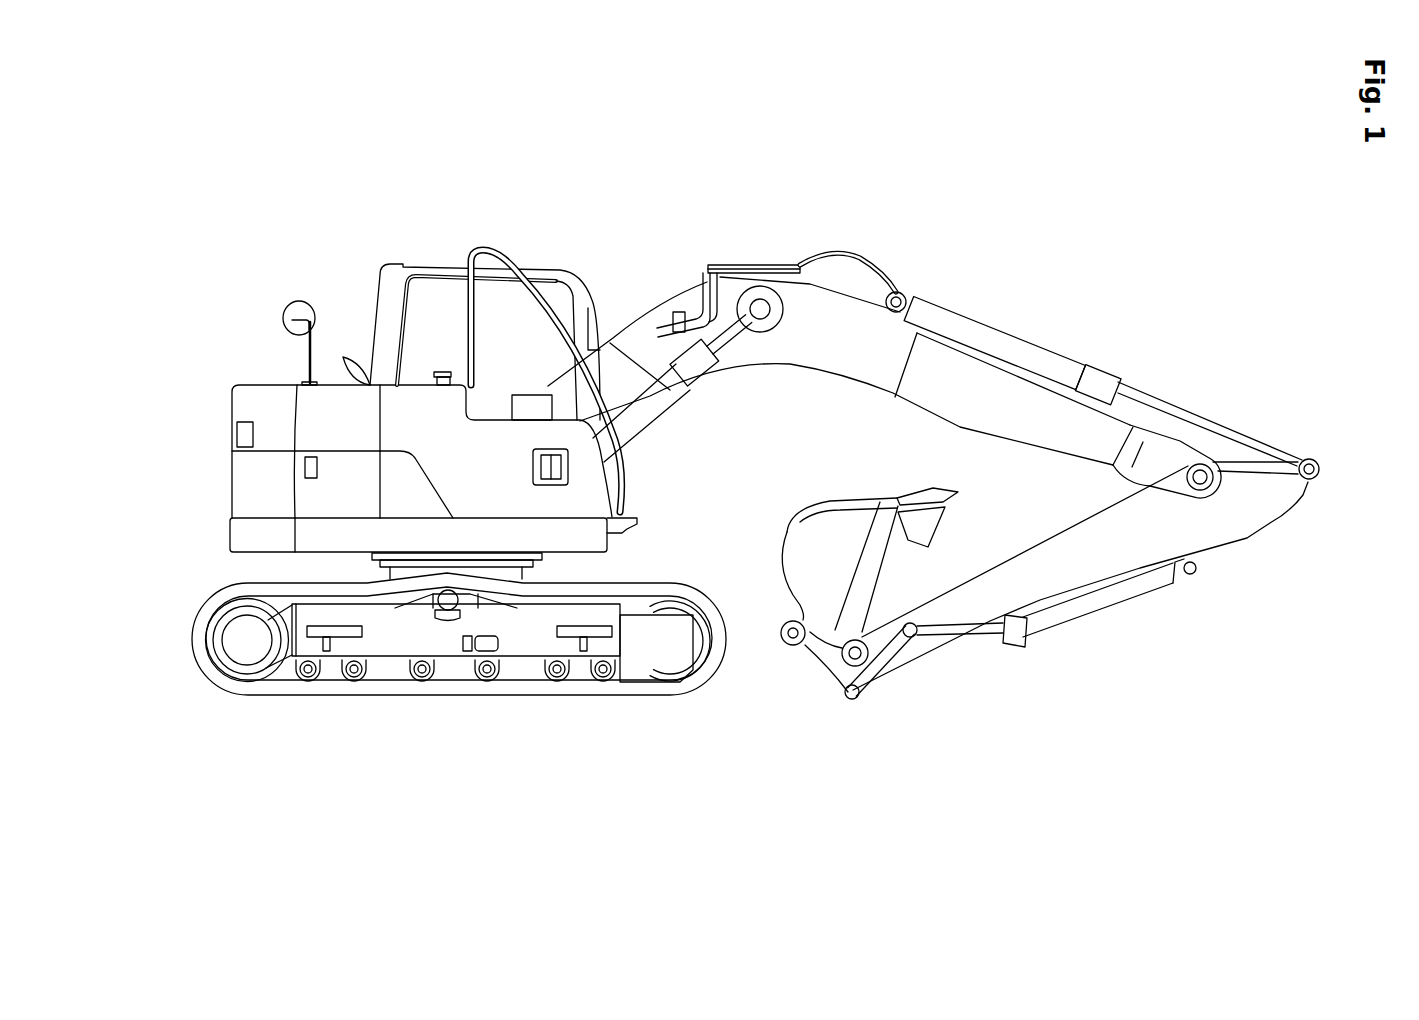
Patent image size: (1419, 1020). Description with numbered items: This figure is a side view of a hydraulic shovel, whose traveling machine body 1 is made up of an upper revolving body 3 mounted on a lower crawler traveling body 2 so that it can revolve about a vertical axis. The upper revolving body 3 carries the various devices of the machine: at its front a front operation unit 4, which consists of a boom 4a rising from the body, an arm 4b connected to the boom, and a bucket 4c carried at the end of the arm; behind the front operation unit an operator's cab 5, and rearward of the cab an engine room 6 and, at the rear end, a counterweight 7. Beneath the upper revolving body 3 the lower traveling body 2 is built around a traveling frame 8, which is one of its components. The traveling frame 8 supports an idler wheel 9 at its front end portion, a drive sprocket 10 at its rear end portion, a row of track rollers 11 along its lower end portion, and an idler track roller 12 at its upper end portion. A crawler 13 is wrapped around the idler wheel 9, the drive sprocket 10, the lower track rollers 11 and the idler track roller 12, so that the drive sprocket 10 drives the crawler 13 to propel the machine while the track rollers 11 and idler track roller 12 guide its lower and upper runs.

The traveling machine body 1 is at (853, 197).
The lower crawler traveling body 2 is at (460, 703).
The upper revolving body 3 is at (352, 288).
The front operation unit 4 is at (1038, 326).
The boom 4a is at (852, 318).
The arm 4b is at (1110, 562).
The bucket 4c is at (826, 577).
The operator's cab 5 is at (553, 283).
The engine room 6 is at (333, 408).
The counterweight 7 is at (277, 403).
The traveling frame 8 is at (527, 640).
The idler wheel 9 is at (697, 640).
The drive sprocket 10 is at (235, 643).
The track rollers 11 is at (355, 672).
The idler track roller 12 is at (447, 610).
The crawler 13 is at (203, 620).